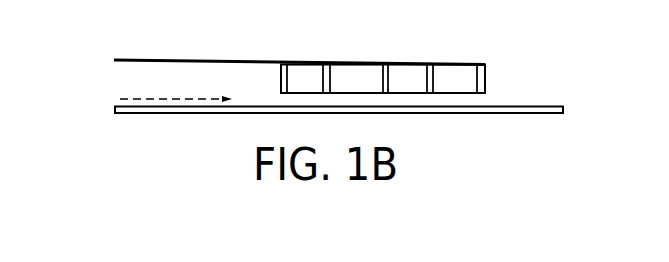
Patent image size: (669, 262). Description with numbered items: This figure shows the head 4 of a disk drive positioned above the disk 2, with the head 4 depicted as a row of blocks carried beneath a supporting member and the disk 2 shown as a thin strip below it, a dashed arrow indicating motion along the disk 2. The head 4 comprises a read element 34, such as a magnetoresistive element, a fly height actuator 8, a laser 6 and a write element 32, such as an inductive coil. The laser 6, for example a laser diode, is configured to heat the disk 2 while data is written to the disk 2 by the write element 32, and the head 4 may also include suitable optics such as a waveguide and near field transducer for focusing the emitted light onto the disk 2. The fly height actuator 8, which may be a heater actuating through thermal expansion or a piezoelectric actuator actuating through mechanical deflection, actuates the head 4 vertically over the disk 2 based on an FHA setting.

The disk 2 is at (570, 103).
The head 4 is at (409, 57).
The read element 34 is at (306, 64).
The fly height actuator 8 is at (357, 64).
The laser 6 is at (408, 64).
The write element 32 is at (475, 64).